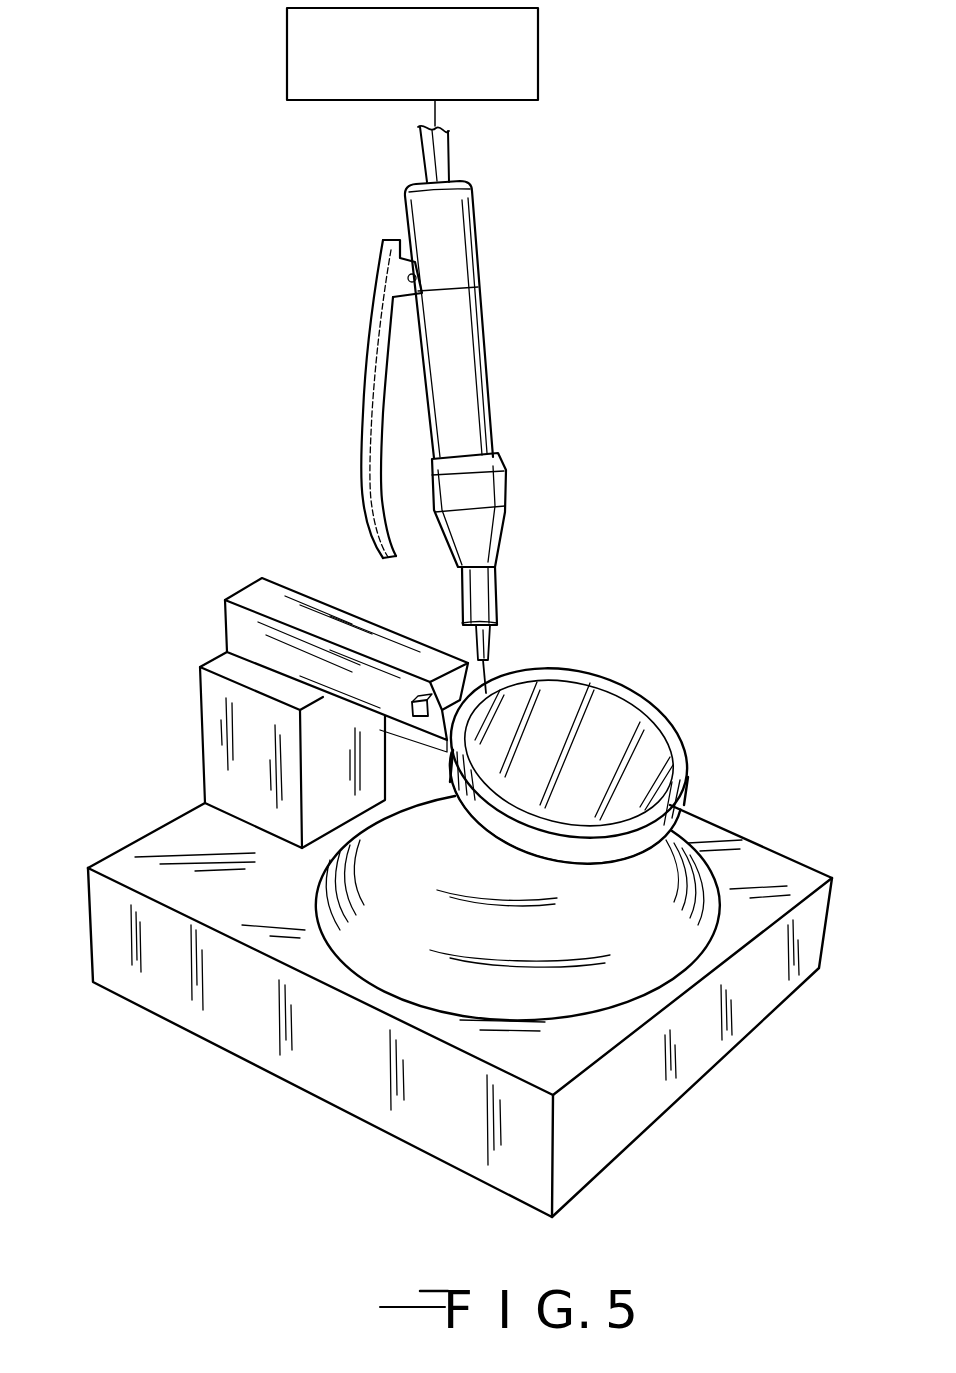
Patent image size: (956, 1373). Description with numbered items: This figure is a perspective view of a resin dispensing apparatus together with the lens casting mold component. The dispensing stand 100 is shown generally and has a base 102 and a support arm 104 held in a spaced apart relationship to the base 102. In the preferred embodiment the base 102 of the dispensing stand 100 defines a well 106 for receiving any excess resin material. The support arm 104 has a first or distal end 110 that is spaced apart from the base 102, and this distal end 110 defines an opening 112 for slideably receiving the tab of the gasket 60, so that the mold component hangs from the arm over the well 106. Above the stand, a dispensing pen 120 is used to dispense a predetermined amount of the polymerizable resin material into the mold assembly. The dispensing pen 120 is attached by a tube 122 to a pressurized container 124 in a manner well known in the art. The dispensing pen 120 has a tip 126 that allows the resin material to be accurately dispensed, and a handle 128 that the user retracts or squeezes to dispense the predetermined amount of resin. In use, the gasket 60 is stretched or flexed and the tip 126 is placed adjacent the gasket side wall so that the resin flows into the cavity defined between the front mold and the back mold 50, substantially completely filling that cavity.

The back mold 50 is at (642, 757).
The gasket 60 is at (684, 712).
The dispensing stand 100 is at (183, 718).
The base 102 is at (128, 844).
The support arm 104 is at (266, 590).
The well 106 is at (362, 960).
The distal end 110 is at (483, 665).
The opening 112 is at (411, 706).
The dispensing pen 120 is at (487, 314).
The tube 122 is at (456, 153).
The pressurized container 124 is at (288, 97).
The tip 126 is at (513, 666).
The handle 128 is at (376, 309).